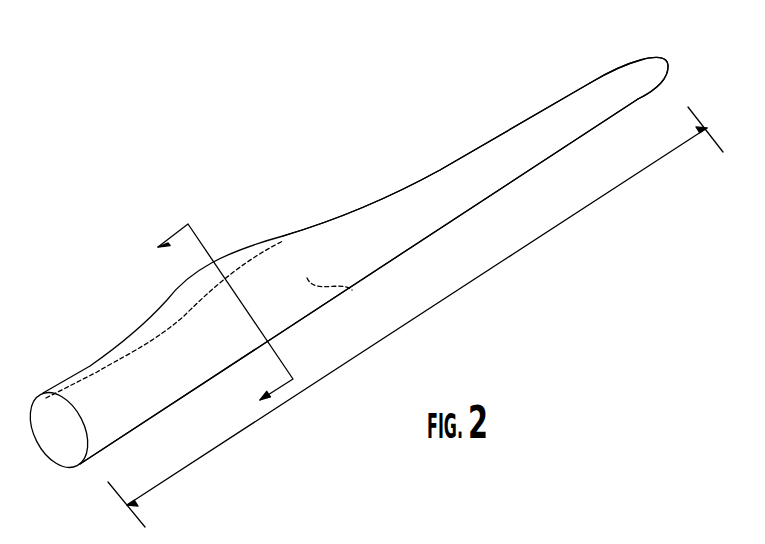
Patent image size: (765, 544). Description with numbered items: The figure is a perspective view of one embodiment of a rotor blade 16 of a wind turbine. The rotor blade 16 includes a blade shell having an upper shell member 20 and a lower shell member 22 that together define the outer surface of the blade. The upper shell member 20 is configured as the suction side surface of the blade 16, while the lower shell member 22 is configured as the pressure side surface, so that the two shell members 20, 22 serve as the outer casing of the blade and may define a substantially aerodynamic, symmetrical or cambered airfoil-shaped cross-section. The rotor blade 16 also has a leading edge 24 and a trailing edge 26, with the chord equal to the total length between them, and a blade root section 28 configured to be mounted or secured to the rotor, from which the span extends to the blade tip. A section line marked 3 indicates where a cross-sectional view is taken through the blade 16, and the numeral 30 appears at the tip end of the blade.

The rotor blade 16 is at (320, 158).
The upper shell member 20 is at (182, 330).
The lower shell member 22 is at (352, 290).
The leading edge 24 is at (438, 235).
The trailing edge 26 is at (437, 169).
The blade root section 28 is at (97, 390).
The tip end 30 is at (618, 88).
The section line 3- 3 is at (216, 322).